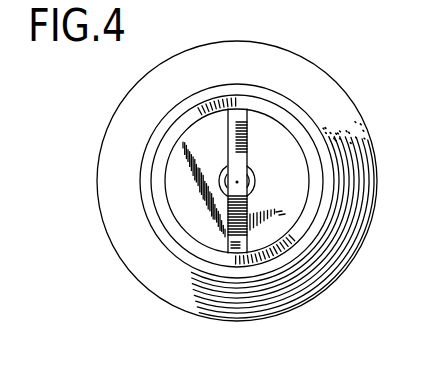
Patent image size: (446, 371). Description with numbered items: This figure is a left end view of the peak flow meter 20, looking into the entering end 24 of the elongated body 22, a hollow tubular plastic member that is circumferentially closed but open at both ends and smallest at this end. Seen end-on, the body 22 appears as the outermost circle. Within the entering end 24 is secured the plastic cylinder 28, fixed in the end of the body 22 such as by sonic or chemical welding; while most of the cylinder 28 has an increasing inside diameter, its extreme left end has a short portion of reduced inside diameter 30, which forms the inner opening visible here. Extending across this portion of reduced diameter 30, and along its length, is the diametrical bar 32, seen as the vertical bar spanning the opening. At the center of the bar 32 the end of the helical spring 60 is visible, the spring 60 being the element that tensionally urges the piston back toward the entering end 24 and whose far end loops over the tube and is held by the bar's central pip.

The peak flow meter 20 is at (326, 62).
The elongated body 22 is at (338, 103).
The entering end 24 is at (263, 92).
The plastic cylinder 28 is at (231, 96).
The portion of reduced inside diameter 30 is at (307, 176).
The diametrical bar 32 is at (227, 203).
The helical spring 60 is at (250, 174).